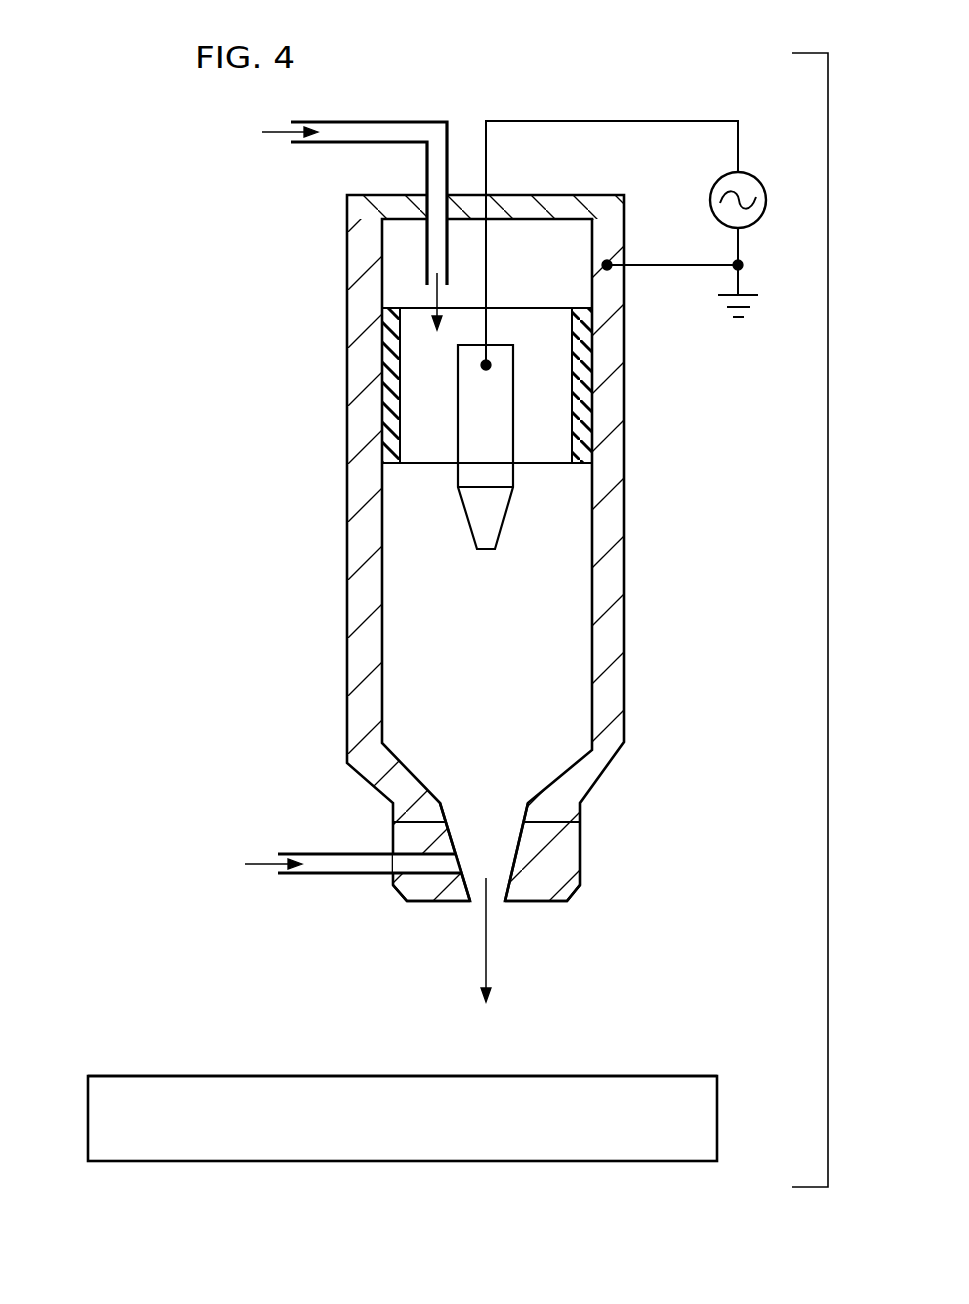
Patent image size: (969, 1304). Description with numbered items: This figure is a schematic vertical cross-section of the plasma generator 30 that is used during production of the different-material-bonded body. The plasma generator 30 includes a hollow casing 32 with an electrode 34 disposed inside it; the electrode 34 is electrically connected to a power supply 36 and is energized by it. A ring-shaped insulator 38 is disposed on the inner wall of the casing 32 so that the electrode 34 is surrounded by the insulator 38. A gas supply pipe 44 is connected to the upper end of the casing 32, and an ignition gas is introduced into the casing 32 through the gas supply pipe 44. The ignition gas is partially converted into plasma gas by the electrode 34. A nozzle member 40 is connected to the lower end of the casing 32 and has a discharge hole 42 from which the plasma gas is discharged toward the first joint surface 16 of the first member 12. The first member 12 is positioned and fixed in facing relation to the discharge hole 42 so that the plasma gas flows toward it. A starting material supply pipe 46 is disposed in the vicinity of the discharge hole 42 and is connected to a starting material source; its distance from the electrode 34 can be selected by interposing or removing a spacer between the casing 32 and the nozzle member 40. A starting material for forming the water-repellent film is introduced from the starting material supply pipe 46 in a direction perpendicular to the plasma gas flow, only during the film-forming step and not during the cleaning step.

The plasma generator 30 is at (626, 76).
The hollow casing 32 is at (610, 592).
The electrode 34 is at (484, 525).
The power supply 36 is at (752, 187).
The ring-shaped insulator 38 is at (578, 404).
The nozzle member 40 is at (563, 863).
The discharge hole 42 is at (462, 857).
The gas supply pipe 44 is at (384, 132).
The starting material supply pipe 46 is at (333, 862).
The first member 12 is at (705, 1111).
The first joint surface 16 is at (365, 1075).